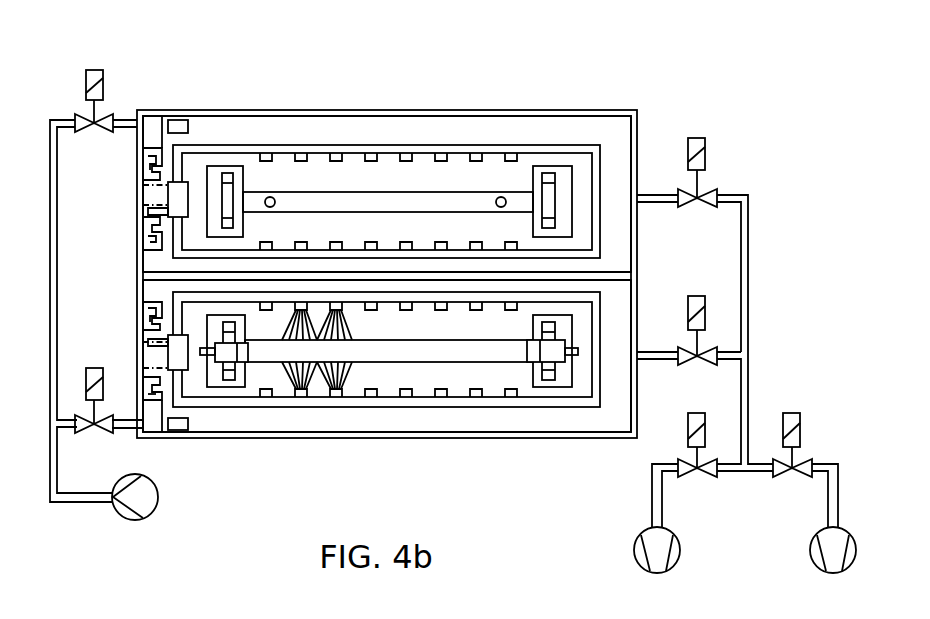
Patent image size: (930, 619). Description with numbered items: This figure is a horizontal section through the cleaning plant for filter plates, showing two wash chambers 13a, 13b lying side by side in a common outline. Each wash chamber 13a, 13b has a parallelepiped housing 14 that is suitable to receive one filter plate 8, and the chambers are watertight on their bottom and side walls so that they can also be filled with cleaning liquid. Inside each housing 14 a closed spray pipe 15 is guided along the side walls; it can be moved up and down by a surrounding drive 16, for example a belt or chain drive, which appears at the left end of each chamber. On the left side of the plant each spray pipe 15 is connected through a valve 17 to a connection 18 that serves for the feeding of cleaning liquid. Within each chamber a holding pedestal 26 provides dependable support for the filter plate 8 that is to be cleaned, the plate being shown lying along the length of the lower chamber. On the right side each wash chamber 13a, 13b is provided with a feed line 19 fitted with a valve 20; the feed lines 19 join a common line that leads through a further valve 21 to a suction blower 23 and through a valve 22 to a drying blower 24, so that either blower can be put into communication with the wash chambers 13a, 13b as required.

The filter plate 8 is at (457, 365).
The wash chamber 13a is at (580, 100).
The wash chamber 13b is at (568, 447).
The parallelepiped housing 14 is at (258, 110).
The spray pipe 15 is at (493, 150).
The surrounding drive 16 is at (148, 212).
The valve 17 is at (99, 120).
The connection 18 is at (158, 497).
The feed line 19 is at (657, 193).
The valve 20 is at (696, 206).
The valve 21 is at (697, 478).
The valve 22 is at (792, 478).
The suction blower 23 is at (634, 548).
The drying blower 24 is at (810, 548).
The holding pedestal 26 is at (352, 200).